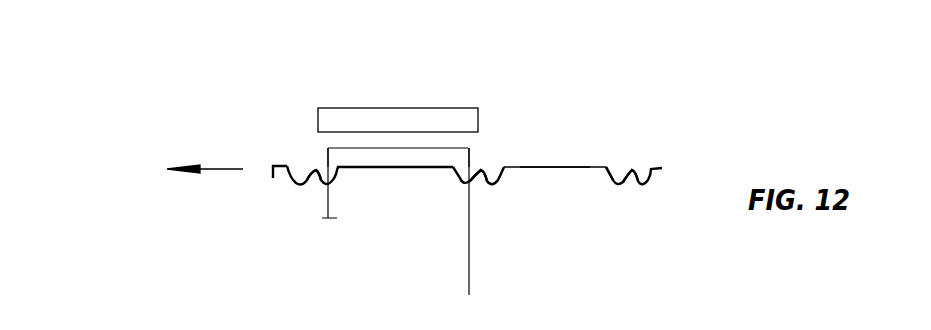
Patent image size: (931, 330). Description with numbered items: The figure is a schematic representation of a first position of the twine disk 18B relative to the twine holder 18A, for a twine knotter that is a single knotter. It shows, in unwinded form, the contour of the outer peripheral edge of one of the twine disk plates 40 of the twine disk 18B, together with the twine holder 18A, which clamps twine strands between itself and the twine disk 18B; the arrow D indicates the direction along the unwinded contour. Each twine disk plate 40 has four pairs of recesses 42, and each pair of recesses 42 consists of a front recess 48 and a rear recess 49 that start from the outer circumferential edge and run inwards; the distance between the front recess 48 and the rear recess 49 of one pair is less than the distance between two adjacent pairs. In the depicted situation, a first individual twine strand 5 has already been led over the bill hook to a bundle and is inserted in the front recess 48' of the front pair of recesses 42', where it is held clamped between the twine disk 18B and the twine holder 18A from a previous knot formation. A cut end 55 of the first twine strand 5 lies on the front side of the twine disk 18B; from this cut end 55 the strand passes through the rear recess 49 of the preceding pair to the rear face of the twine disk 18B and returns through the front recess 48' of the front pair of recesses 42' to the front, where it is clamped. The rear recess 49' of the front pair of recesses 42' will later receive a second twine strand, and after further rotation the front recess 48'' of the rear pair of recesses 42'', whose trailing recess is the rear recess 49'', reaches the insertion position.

The direction D is at (187, 174).
The twine holder 18A is at (407, 108).
The twine disk 18B is at (273, 178).
The front recess 48 is at (350, 114).
The pair of recesses 42 is at (325, 106).
The rear recess 49 is at (353, 112).
The front recess of the front pair of recesses 48' is at (467, 114).
The front pair of recesses 42' is at (501, 106).
The rear recess of the front pair of recesses 49' is at (528, 113).
The twine disk plate 40 is at (553, 167).
The front recess of the rear pair of recesses 48'' is at (648, 114).
The rear pair of recesses 42'' is at (675, 112).
The rear recess of the rear pair of recesses 49'' is at (711, 113).
The cut end 55 is at (325, 222).
The first individual twine strand 5 is at (468, 208).